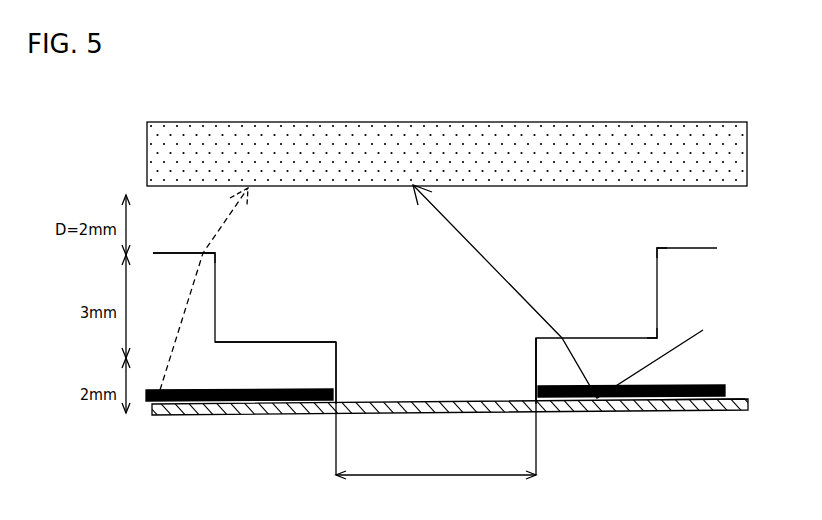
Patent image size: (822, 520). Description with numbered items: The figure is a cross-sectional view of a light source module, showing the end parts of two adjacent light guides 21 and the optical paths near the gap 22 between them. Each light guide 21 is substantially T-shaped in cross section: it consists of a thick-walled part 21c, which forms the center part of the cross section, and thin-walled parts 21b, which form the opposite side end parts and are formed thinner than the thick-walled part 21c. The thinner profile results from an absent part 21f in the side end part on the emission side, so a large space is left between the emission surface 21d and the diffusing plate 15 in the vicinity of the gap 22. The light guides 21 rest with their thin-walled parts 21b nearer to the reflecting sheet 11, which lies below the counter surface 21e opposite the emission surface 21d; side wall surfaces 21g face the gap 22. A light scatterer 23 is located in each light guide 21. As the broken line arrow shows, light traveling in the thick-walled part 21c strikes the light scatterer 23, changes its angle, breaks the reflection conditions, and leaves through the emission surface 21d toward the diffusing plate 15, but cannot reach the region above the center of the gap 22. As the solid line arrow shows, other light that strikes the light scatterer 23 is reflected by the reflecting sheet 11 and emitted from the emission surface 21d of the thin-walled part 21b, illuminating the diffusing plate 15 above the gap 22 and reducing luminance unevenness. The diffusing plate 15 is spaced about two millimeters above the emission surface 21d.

The diffusing plate 15 is at (737, 147).
The reflecting sheet 11 is at (745, 403).
The light scatterer 23 is at (678, 385).
The light guide 21 is at (226, 292).
The thin-walled part 21b is at (543, 353).
The thick-walled part 21c is at (180, 263).
The emission surface 21d is at (212, 252).
The counter surface 21e is at (698, 399).
The absent part 21f is at (310, 342).
The side wall surface 21g is at (337, 372).
The gap 22 is at (436, 468).